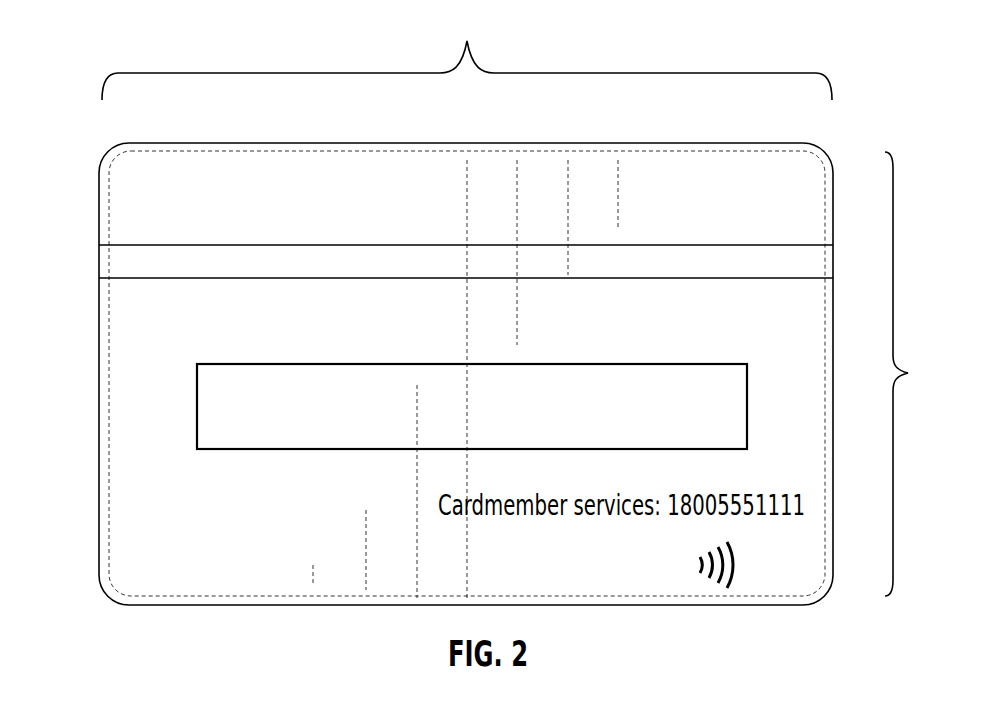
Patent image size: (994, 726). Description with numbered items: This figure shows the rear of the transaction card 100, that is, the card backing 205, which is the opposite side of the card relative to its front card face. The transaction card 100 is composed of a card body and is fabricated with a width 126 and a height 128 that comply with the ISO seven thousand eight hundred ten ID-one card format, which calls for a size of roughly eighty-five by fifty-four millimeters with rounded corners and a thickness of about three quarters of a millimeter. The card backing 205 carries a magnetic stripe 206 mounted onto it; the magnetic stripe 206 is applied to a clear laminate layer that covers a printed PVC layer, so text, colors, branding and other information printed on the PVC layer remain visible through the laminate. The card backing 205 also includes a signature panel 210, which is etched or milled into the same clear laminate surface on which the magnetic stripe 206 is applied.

The transaction card 100 is at (107, 62).
The width 126 is at (467, 56).
The height 128 is at (918, 374).
The card backing 205 is at (802, 216).
The magnetic stripe 206 is at (655, 265).
The signature panel 210 is at (197, 400).